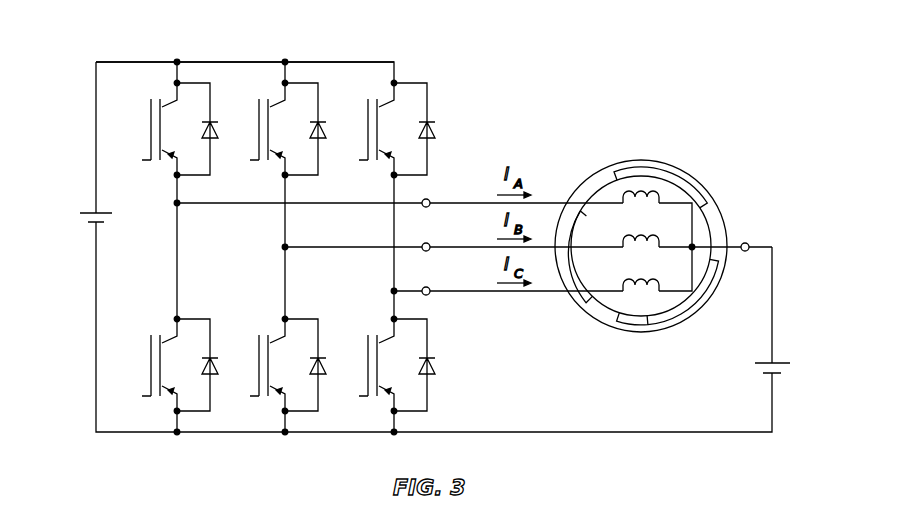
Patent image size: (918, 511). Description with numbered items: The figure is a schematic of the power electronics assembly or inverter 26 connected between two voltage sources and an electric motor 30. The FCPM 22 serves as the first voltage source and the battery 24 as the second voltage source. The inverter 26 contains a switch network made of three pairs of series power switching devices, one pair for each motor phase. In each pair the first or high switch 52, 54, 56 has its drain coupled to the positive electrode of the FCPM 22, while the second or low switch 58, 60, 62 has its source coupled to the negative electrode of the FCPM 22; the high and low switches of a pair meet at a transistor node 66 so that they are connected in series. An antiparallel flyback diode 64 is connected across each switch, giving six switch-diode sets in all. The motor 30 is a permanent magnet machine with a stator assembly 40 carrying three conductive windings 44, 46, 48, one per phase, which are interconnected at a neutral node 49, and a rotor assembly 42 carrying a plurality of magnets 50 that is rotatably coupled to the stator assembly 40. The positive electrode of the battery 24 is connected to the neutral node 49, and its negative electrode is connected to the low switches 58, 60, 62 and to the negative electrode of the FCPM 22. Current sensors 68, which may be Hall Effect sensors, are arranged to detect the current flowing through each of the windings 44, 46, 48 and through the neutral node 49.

The FCPM 22 is at (92, 224).
The battery 24 is at (768, 374).
The power electronics assembly 26 is at (463, 36).
The electric motor 30 is at (637, 236).
The stator assembly 40 is at (603, 168).
The rotor assembly 42 is at (619, 328).
The winding 44 is at (628, 206).
The winding 46 is at (628, 250).
The winding 48 is at (650, 289).
The neutral node 49 is at (690, 244).
The magnets 50 is at (692, 190).
The first switch 52 is at (151, 121).
The first switch 54 is at (259, 121).
The first switch 56 is at (368, 121).
The second switch 58 is at (151, 350).
The second switch 60 is at (259, 350).
The second switch 62 is at (368, 350).
The antiparallel diodes 64 is at (212, 137).
The transistor node 66 is at (177, 203).
The current sensors 68 is at (430, 200).